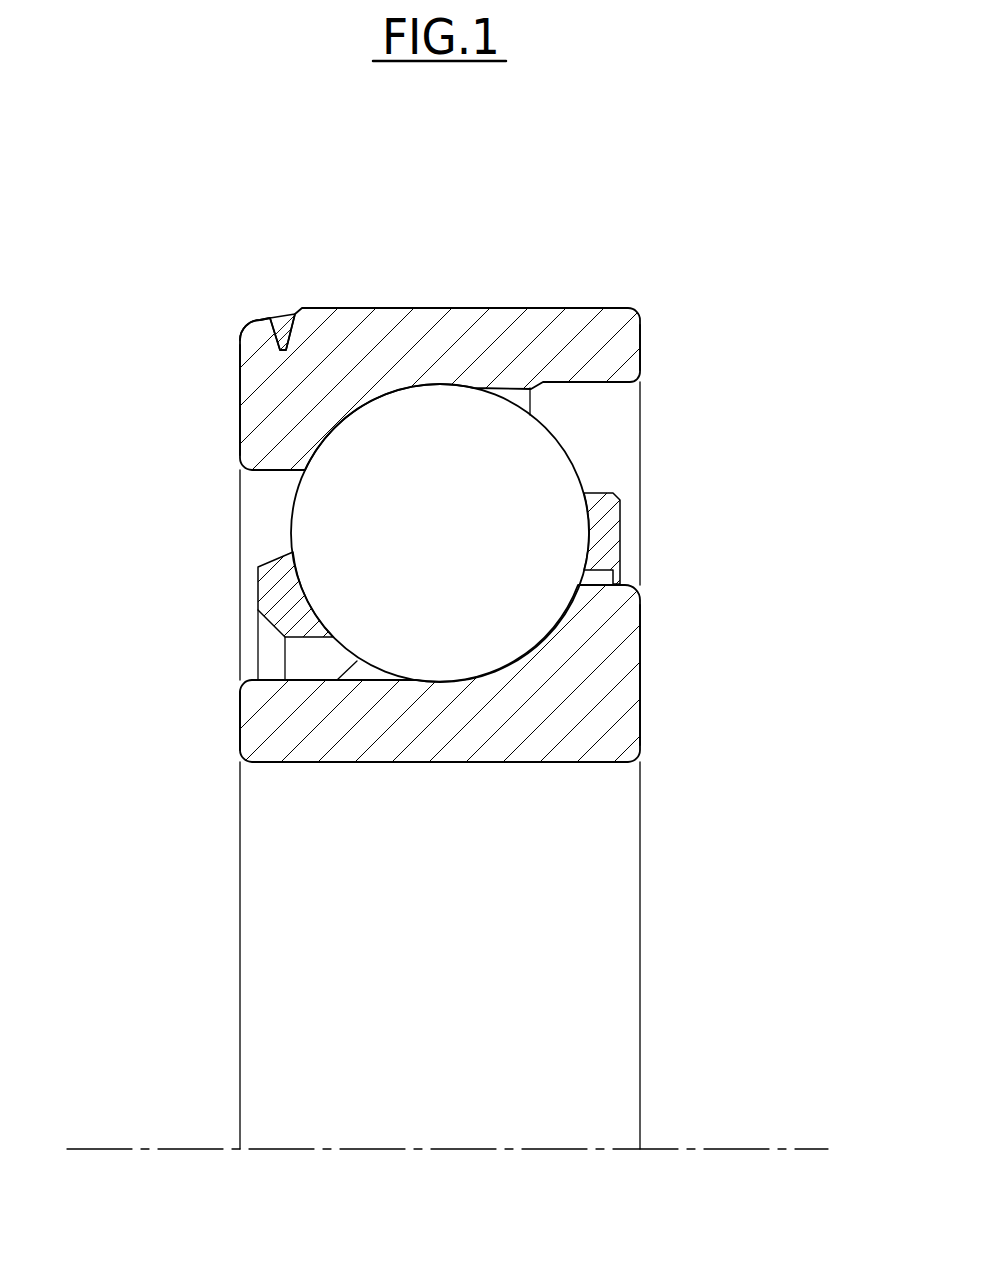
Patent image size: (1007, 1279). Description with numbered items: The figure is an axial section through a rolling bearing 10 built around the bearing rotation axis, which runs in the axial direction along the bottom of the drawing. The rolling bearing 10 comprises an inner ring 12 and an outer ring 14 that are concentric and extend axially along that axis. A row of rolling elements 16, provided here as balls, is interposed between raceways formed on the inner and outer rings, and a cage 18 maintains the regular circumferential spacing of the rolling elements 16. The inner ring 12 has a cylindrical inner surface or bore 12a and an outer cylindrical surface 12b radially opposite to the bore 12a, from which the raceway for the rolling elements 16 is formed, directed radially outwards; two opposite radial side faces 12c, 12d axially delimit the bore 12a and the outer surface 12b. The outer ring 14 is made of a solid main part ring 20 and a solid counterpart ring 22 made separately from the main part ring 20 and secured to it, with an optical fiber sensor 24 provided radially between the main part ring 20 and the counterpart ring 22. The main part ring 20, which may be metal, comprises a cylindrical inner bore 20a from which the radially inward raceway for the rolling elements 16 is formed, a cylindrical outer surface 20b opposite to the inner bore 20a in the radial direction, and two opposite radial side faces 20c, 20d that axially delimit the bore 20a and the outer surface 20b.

The rolling bearing 10 is at (594, 256).
The inner ring 12 is at (642, 641).
The bore 12a is at (574, 762).
The outer cylindrical surface 12b is at (264, 672).
The radial side face 12c is at (240, 718).
The radial side face 12d is at (640, 681).
The outer ring 14 is at (503, 513).
The rolling elements 16 is at (467, 527).
The cage 18 is at (608, 540).
The main part ring 20 is at (424, 314).
The cylindrical inner bore 20a is at (572, 382).
The cylindrical outer surface 20b is at (544, 308).
The radial side face 20c is at (239, 432).
The radial side face 20d is at (640, 354).
The counterpart ring 22 is at (281, 316).
The optical fiber sensor 24 is at (272, 354).